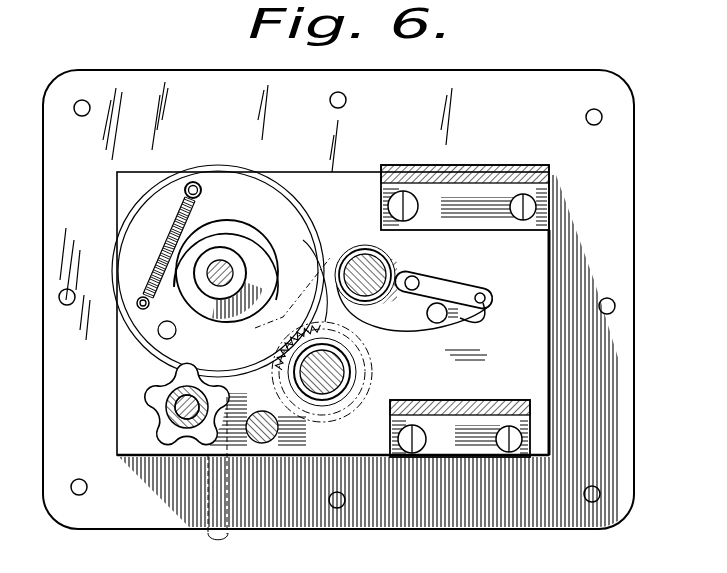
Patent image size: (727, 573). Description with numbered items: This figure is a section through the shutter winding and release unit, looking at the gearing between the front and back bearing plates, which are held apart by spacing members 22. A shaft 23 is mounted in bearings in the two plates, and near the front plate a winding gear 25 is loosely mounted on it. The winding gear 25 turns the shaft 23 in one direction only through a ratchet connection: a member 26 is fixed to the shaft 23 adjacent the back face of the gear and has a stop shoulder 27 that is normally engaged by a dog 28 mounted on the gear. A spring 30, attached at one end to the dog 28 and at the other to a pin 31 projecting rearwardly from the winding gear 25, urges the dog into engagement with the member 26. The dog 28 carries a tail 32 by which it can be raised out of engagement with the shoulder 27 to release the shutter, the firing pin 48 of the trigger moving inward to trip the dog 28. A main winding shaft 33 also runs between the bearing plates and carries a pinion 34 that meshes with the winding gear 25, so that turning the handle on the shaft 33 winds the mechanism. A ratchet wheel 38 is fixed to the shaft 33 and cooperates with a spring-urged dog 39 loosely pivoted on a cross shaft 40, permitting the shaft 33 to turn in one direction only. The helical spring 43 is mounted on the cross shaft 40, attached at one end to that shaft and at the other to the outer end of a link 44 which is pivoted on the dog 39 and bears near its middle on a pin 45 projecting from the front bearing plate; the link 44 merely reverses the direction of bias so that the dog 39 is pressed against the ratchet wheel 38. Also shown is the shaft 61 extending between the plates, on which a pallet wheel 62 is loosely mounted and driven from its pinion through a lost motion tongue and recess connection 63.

The spacing members 22 is at (487, 168).
The shaft 23 is at (232, 270).
The winding gear 25 is at (233, 196).
The member 26 is at (229, 229).
The stop shoulder 27 is at (177, 268).
The dog 28 is at (147, 320).
The spring 30 is at (172, 234).
The pin 31 is at (195, 182).
The tail 32 is at (243, 347).
The main winding shaft 33 is at (327, 380).
The pinion 34 is at (352, 364).
The ratchet wheel 38 is at (346, 323).
The dog 39 is at (312, 264).
The cross shaft 40 is at (380, 268).
The helical spring 43 is at (380, 249).
The link 44 is at (456, 289).
The pin 45 is at (450, 320).
The firing pin 48 is at (232, 541).
The shaft 61 is at (183, 410).
The pallet wheel 62 is at (157, 399).
The lost motion tongue and recess connection 63 is at (185, 393).